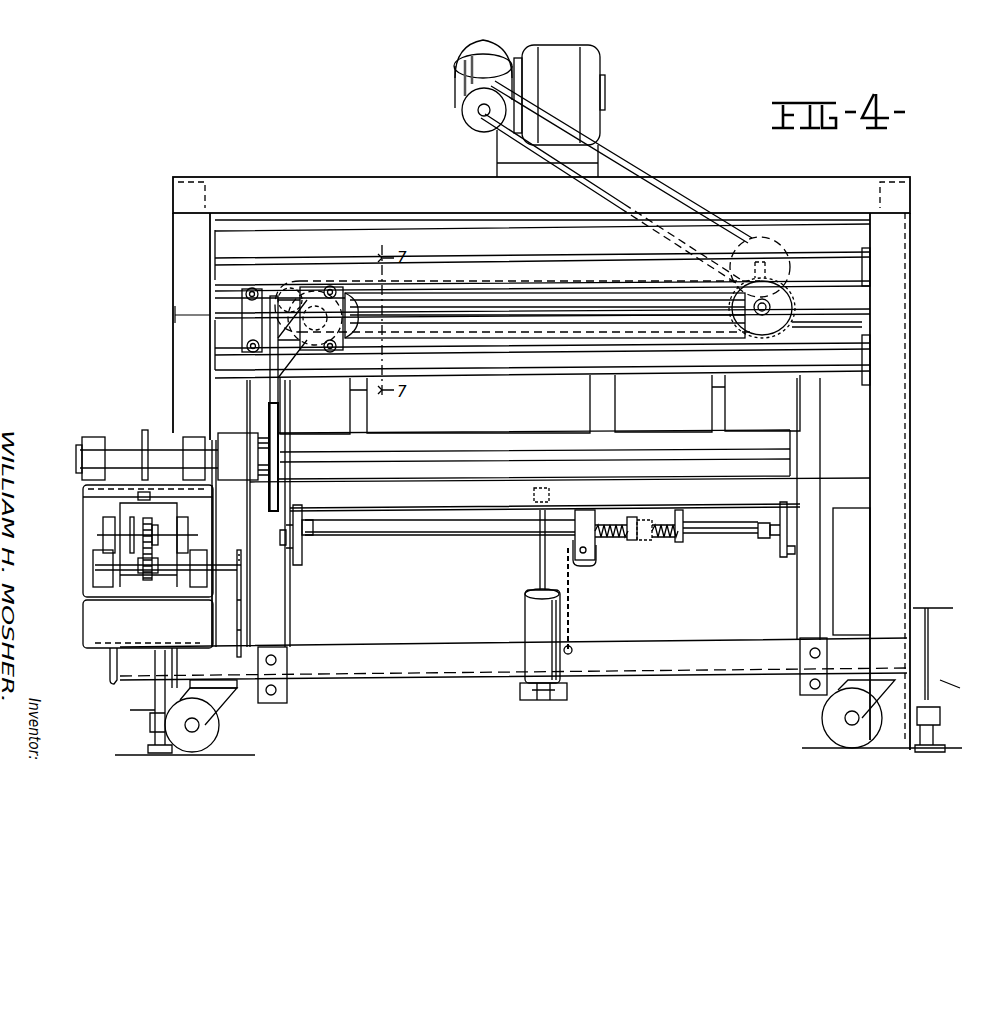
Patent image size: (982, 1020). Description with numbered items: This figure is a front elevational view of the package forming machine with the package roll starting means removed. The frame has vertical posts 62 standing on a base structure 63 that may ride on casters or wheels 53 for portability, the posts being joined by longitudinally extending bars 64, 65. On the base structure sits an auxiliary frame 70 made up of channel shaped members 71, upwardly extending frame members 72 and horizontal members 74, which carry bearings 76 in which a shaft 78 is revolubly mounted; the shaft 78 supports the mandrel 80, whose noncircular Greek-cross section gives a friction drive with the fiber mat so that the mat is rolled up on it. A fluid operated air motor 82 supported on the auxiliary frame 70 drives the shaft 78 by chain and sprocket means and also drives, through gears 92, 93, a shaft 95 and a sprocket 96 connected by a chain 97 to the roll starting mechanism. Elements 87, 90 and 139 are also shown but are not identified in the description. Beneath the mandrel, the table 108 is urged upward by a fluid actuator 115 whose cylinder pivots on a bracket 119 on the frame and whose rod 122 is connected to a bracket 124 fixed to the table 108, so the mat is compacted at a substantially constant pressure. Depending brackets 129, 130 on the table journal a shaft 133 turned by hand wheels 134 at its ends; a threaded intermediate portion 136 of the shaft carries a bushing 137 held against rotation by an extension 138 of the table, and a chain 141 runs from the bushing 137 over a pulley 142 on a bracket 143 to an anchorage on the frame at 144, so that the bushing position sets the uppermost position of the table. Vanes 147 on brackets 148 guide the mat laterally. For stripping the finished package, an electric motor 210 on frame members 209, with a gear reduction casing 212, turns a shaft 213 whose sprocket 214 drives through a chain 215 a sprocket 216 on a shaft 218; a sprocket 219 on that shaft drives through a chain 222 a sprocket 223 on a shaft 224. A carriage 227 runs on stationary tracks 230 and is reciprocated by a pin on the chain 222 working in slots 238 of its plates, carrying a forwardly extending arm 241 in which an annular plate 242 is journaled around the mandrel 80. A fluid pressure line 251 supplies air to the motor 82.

The casters or wheels 53 is at (222, 730).
The vertical posts 62 is at (173, 322).
The base structure 63 is at (416, 676).
The longitudinally extending bar 64 is at (392, 186).
The longitudinally extending bar 65 is at (580, 370).
The auxiliary frame 70 is at (213, 525).
The channel shaped members 71 is at (82, 636).
The upwardly extending frame members 72 is at (180, 636).
The horizontal members 74 is at (82, 489).
The journals or bearings 76 is at (98, 424).
The shaft 78 is at (118, 446).
The mandrel 80 is at (494, 431).
The fluid operated motor 82 is at (120, 512).
The disc 87 is at (145, 428).
The upper shaft 90 is at (168, 535).
The gear 92 is at (152, 545).
The gear 93 is at (147, 580).
The shaft 95 is at (162, 575).
The sprocket 96 is at (241, 580).
The chain 97 is at (241, 620).
The table 108 is at (728, 532).
The fluid actuator 115 is at (525, 628).
The bracket 119 is at (567, 698).
The rod 122 is at (540, 582).
The bracket 124 is at (534, 496).
The depending bracket 129 is at (312, 540).
The depending bracket 130 is at (680, 546).
The shaft 133 is at (430, 538).
The hand wheels 134 is at (296, 565).
The threaded intermediate portion 136 is at (665, 545).
The threaded nut or bushing 137 is at (642, 545).
The extension 138 is at (634, 516).
The slide block 139 is at (622, 498).
The chain 141 is at (604, 540).
The pulley 142 is at (592, 547).
The bracket 143 is at (585, 555).
The chain anchor 144 is at (578, 644).
The vanes 147 is at (367, 418).
The brackets 148 is at (358, 390).
The frame members 209 is at (598, 160).
The electrically energizable motor 210 is at (600, 70).
The casing 212 is at (456, 74).
The shaft 213 is at (462, 110).
The sprocket 214 is at (478, 112).
The chain 215 is at (497, 138).
The sprocket 216 is at (785, 252).
The shaft 218 is at (762, 308).
The sprocket 219 is at (795, 308).
The chain 222 is at (555, 334).
The sprocket 223 is at (362, 306).
The shaft 224 is at (315, 318).
The carriage 227 is at (212, 300).
The stationary ways or tracks 230 is at (220, 272).
The slots 238 is at (292, 282).
The forwardly extending arm 241 is at (270, 393).
The annular plate 242 is at (270, 410).
The fluid pressure line 251 is at (150, 496).